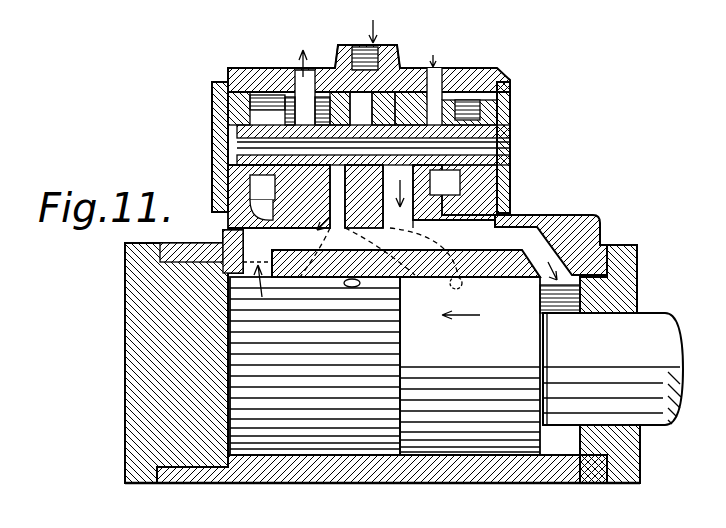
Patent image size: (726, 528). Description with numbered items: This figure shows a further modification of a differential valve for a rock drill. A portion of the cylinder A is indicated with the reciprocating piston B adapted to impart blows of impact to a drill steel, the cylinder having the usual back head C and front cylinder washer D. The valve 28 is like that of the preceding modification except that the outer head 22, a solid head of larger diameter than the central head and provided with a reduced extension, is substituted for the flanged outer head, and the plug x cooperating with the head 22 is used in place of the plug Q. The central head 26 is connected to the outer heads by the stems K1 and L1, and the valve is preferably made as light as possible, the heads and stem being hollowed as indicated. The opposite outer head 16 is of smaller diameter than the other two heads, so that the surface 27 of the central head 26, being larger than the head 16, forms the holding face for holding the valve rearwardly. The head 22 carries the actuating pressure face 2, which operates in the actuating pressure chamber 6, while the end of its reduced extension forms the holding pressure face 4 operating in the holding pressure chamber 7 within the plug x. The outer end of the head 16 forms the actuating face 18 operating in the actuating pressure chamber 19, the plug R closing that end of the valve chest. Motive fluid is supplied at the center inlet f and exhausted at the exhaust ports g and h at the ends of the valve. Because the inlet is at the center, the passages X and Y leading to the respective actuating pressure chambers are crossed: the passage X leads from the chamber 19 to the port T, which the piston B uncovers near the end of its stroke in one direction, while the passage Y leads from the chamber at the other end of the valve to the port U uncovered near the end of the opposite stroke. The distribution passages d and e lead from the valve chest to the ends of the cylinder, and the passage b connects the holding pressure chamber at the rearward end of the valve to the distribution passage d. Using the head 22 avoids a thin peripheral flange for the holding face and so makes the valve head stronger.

The actuating pressure chamber 6 is at (230, 80).
The outer head 22 is at (275, 88).
The exhaust port g is at (298, 68).
The stem K1 is at (316, 75).
The valve 28 is at (337, 103).
The inlet f is at (370, 45).
The central head 26 is at (397, 62).
The surface of central head 27 is at (434, 72).
The exhaust port h is at (440, 70).
The stem L1 is at (445, 85).
The outer head 16 is at (493, 70).
The plug Q is at (212, 98).
The actuating pressure face 2 is at (270, 117).
The plug x is at (232, 140).
The holding pressure chamber 7 is at (232, 153).
The holding pressure face 4 is at (236, 163).
The passage b is at (230, 217).
The actuating pressure face 18 is at (450, 125).
The plug R is at (503, 143).
The actuating pressure chamber 19 is at (430, 162).
The distribution passage e is at (517, 240).
The front cylinder washer D is at (630, 290).
The back head C is at (140, 420).
The distribution passage d is at (293, 240).
The passage Y is at (328, 235).
The port T is at (353, 287).
The passage X is at (400, 310).
The port U is at (462, 288).
The cylinder A is at (352, 473).
The piston B is at (477, 477).